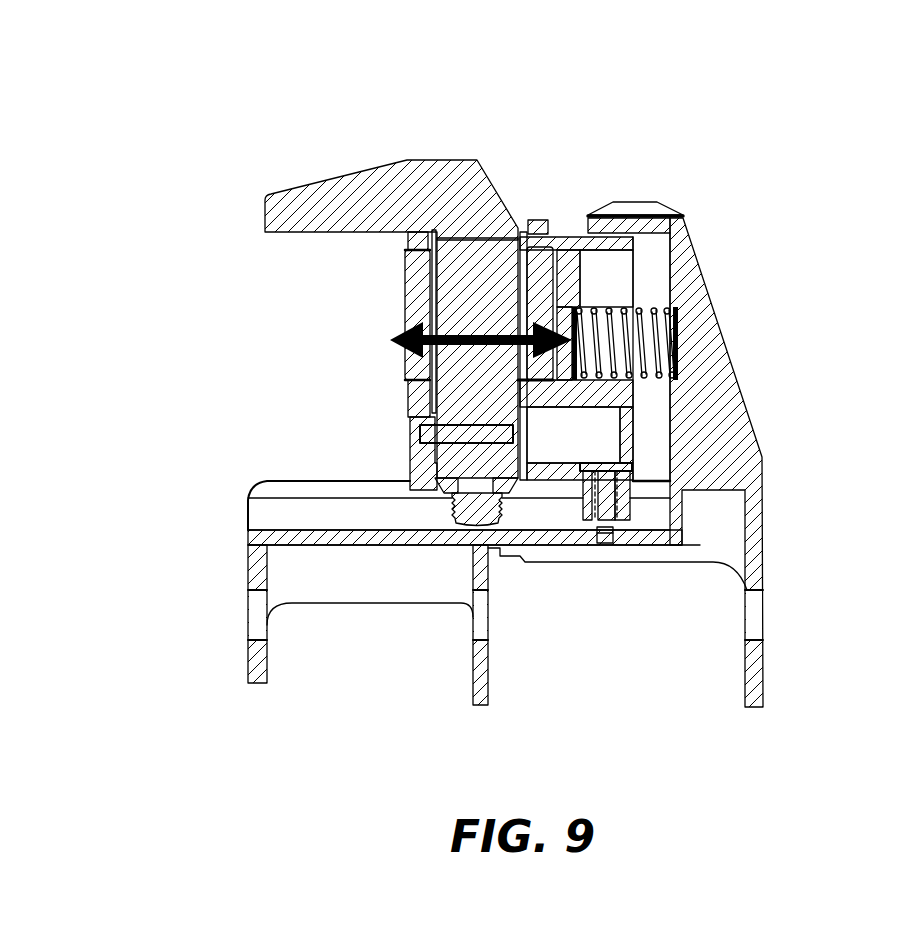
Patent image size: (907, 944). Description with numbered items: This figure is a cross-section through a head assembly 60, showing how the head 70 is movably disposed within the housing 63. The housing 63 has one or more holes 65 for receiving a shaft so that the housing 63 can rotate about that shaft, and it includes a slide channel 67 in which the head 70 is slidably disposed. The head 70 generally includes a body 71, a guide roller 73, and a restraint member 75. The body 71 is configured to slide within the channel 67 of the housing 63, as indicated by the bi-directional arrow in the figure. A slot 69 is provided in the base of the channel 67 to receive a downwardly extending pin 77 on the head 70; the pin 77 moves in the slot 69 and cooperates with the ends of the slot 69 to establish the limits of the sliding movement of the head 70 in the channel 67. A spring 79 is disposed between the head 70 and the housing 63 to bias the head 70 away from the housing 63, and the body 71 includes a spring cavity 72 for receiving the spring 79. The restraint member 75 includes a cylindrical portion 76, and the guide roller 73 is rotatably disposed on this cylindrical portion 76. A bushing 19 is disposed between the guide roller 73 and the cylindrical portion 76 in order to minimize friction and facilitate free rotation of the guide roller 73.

The head assembly 60 is at (730, 74).
The head 70 is at (258, 180).
The restraint member 75 is at (363, 177).
The cylindrical portion 76 is at (468, 293).
The bushing 19 is at (432, 297).
The guide roller 73 is at (410, 367).
The body 71 is at (577, 238).
The spring cavity 72 is at (619, 290).
The spring 79 is at (643, 312).
The housing 63 is at (737, 380).
The slide channel 67 is at (323, 513).
The holes 65 is at (257, 612).
The pin 77 is at (603, 542).
The slot 69 is at (647, 538).